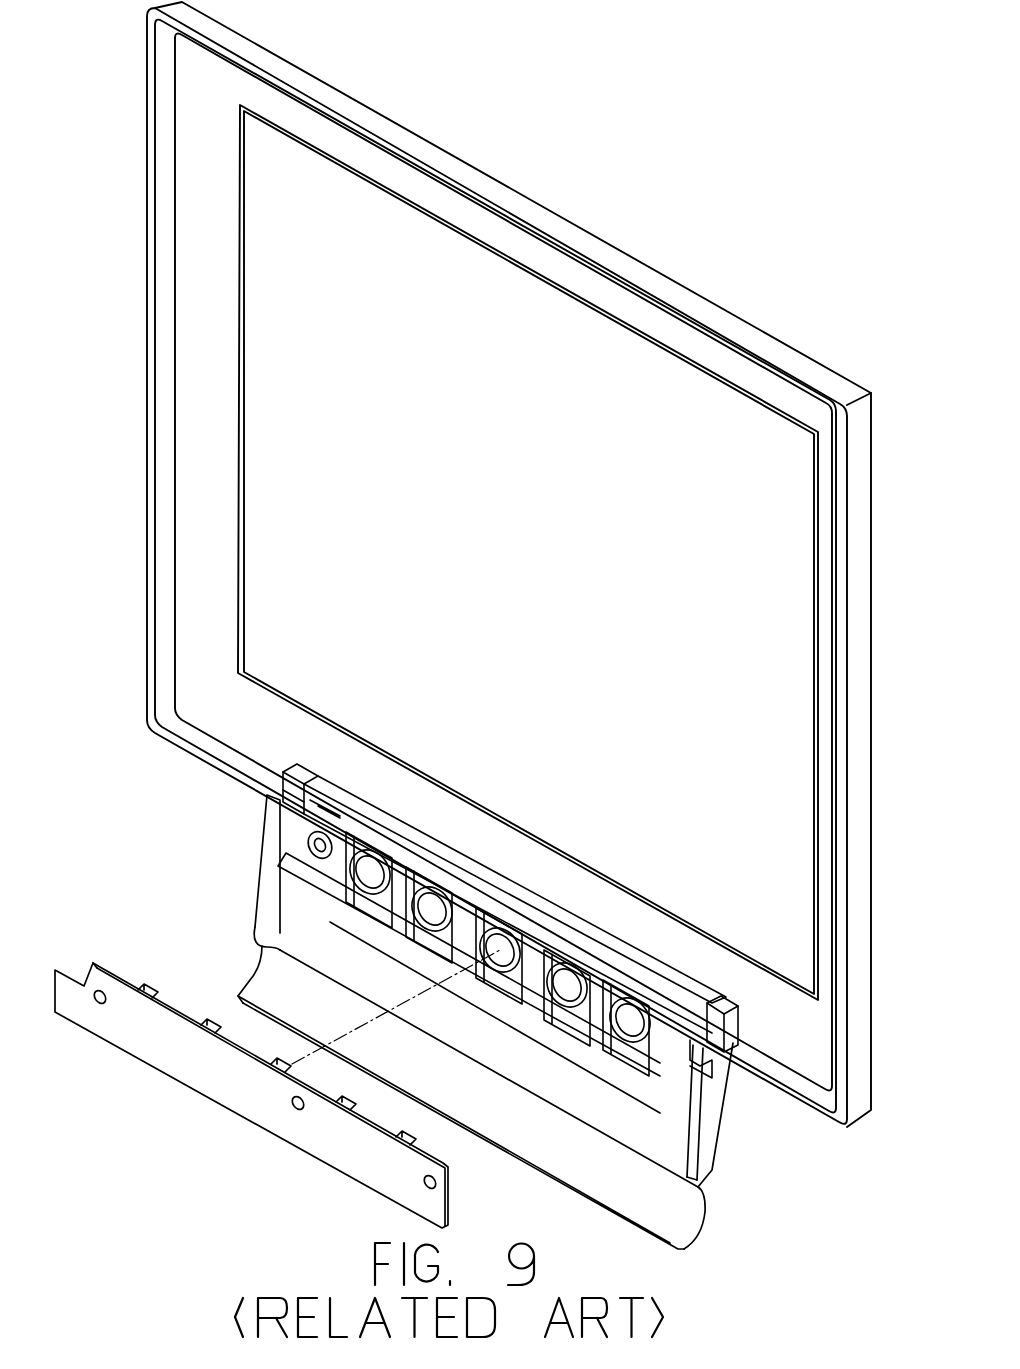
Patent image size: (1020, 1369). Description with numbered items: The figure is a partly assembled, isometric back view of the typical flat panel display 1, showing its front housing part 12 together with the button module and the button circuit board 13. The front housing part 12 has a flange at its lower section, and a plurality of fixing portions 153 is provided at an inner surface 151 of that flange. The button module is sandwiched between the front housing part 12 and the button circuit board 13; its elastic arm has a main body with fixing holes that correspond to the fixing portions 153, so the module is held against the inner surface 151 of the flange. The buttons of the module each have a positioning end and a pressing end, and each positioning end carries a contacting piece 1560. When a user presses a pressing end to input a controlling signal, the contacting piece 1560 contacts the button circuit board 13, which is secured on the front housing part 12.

The flat panel display 1 is at (479, 78).
The front housing part 12 is at (590, 290).
The button circuit board 13 is at (427, 1200).
The inner surface 151 is at (325, 928).
The fixing portions 153 is at (350, 813).
The contacting piece 1560 is at (450, 870).